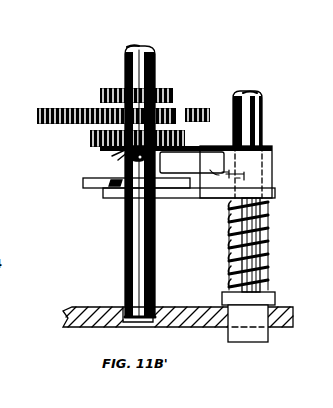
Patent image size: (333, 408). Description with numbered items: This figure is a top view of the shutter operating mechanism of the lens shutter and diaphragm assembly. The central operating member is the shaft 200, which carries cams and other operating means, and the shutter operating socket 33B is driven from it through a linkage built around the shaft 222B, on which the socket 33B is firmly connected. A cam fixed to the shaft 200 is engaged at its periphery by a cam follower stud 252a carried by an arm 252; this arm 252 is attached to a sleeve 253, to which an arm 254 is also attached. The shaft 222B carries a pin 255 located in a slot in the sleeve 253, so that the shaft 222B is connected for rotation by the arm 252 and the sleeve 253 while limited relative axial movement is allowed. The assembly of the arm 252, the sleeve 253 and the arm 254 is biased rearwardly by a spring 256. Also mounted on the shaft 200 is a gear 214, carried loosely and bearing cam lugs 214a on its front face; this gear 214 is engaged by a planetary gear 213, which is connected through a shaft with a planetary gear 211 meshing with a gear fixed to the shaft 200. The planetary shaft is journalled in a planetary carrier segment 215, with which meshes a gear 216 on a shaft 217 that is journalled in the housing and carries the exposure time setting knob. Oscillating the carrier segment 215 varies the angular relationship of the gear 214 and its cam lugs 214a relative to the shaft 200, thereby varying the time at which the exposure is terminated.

The shaft 200 is at (138, 245).
The planetary gear 211 is at (155, 90).
The planetary gear 213 is at (130, 151).
The gear 214 is at (90, 137).
The cam lugs 214a is at (112, 157).
The planetary carrier segment 215 is at (62, 109).
The gear 216 is at (178, 107).
The shaft 217 is at (128, 153).
The shaft 222B is at (248, 110).
The arm 252 is at (160, 197).
The cam follower stud 252a is at (108, 178).
The sleeve 253 is at (250, 160).
The arm 254 is at (187, 149).
The pin 255 is at (202, 166).
The spring 256 is at (266, 220).
The socket 33B is at (236, 342).